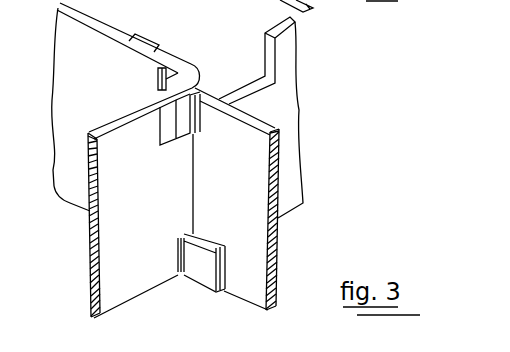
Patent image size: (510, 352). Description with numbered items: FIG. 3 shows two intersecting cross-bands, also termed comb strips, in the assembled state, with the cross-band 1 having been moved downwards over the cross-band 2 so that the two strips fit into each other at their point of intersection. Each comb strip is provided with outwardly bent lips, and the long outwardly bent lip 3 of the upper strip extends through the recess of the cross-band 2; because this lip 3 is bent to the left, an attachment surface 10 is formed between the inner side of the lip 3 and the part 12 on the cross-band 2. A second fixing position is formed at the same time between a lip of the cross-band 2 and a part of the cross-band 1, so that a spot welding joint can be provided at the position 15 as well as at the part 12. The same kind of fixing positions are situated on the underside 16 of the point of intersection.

The cross-band 1 is at (286, 111).
The cross-band 2 is at (252, 172).
The long outwardly bent lip 3 is at (181, 59).
The attachment surface 10 is at (148, 47).
The part on strip 2 12 is at (137, 74).
The spot welding position 15 is at (186, 117).
The underside of the point of intersection 16 is at (201, 284).